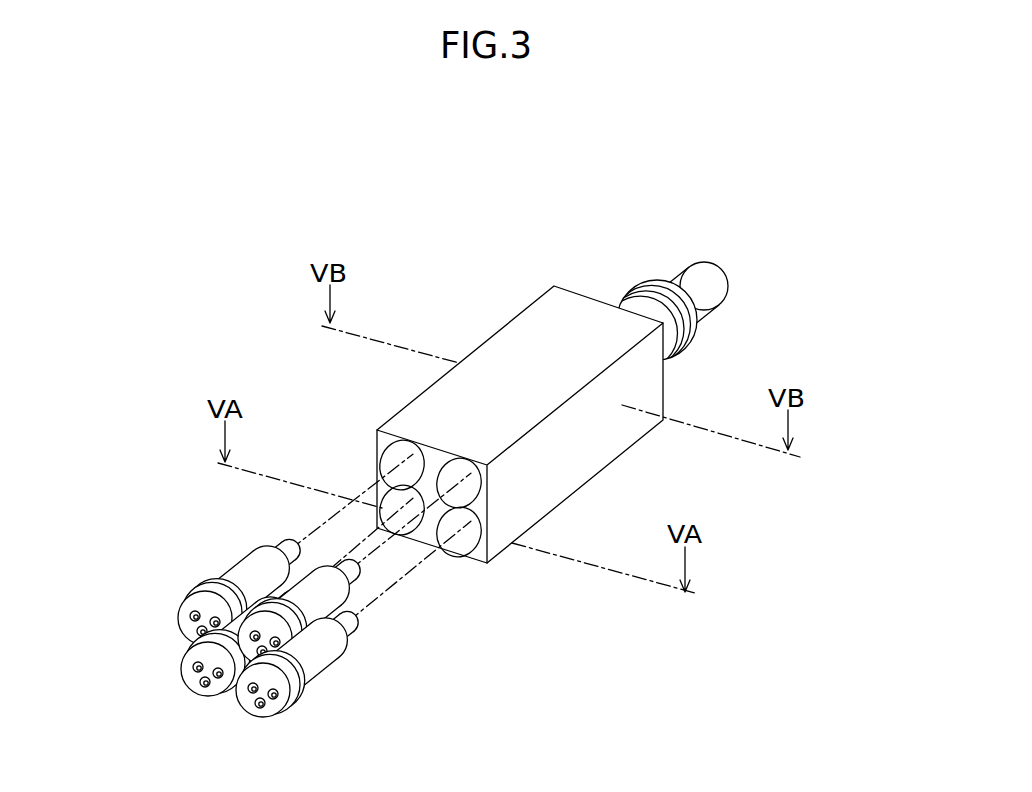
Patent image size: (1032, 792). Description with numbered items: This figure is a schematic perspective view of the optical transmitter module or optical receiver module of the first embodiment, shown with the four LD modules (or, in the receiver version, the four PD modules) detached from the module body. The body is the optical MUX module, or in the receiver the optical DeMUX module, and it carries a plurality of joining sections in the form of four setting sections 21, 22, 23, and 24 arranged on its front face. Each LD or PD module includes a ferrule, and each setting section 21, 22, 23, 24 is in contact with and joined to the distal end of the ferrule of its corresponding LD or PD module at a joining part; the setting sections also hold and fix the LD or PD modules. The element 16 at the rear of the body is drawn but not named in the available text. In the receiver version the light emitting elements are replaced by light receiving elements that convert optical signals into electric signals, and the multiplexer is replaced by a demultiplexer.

The cable boot 16 is at (646, 273).
The setting section 21 is at (473, 487).
The setting section 22 is at (460, 518).
The setting section 23 is at (397, 500).
The setting section 24 is at (392, 462).